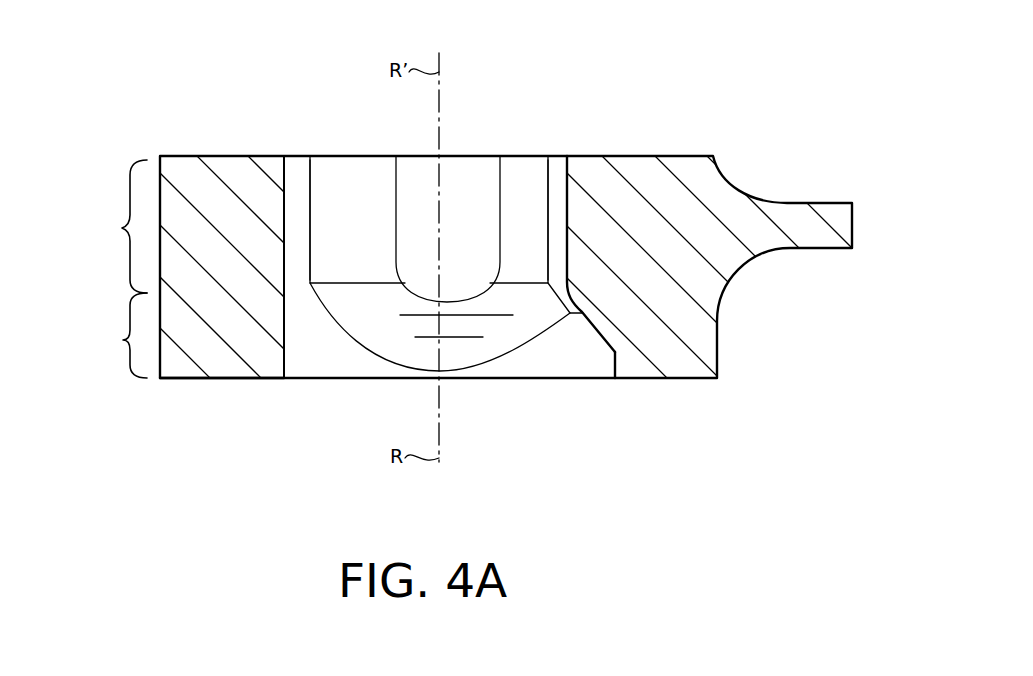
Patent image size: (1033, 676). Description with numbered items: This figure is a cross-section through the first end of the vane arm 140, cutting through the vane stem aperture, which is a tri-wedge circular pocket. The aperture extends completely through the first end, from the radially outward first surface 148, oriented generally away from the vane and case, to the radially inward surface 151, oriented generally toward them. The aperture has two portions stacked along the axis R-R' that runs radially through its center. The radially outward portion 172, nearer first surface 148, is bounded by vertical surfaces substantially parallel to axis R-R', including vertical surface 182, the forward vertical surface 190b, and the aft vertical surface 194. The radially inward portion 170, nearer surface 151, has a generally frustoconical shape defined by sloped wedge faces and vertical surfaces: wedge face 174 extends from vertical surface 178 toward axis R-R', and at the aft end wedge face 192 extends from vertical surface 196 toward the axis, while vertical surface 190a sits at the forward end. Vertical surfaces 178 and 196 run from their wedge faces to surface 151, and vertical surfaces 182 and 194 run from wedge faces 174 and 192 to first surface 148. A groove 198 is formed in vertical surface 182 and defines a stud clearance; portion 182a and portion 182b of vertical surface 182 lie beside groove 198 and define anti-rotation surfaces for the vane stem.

The vane arm 140 is at (112, 101).
The first surface 148 is at (215, 156).
The surface 151 is at (193, 378).
The radially inward portion 170 is at (113, 335).
The radially outward portion 172 is at (112, 226).
The wedge face 174 is at (390, 312).
The vertical surface 178 is at (484, 370).
The vertical surface 182 is at (429, 219).
The portion of vertical surface 182a is at (358, 193).
The portion of vertical surface 182b is at (512, 185).
The vertical surface 190a is at (285, 332).
The vertical surface 190b is at (285, 207).
The wedge face 192 is at (573, 320).
The vertical surface 194 is at (564, 190).
The vertical surface 196 is at (615, 353).
The groove 198 is at (462, 193).